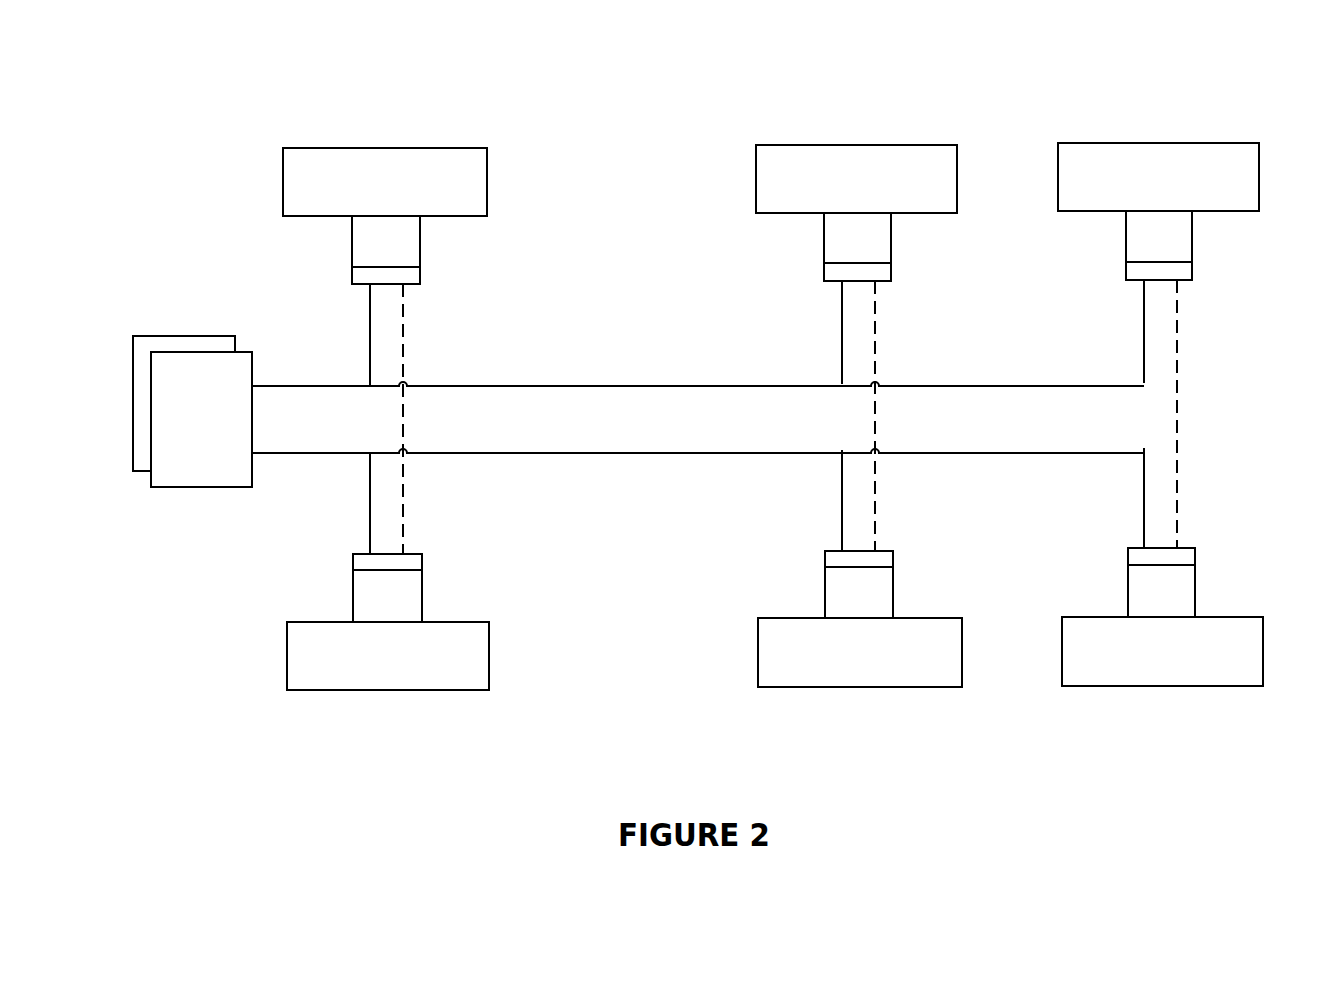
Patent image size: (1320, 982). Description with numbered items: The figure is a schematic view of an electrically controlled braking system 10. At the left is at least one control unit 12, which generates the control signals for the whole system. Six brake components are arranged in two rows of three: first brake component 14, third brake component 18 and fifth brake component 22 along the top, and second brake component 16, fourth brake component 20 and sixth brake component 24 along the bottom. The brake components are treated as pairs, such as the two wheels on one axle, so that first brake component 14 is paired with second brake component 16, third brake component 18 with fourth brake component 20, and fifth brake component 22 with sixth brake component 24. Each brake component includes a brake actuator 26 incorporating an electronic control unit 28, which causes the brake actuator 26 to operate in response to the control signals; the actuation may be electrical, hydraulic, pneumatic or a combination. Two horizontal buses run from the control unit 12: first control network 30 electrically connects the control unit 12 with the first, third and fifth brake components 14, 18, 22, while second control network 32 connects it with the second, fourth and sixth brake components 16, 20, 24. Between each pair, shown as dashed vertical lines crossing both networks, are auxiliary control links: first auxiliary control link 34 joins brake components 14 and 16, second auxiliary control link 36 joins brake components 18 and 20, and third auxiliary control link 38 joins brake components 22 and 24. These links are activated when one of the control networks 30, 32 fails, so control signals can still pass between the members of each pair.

The electrically controlled braking system 10 is at (442, 758).
The control unit 12 is at (220, 365).
The first brake component 14 is at (429, 153).
The second brake component 16 is at (448, 672).
The third brake component 18 is at (782, 153).
The fourth brake component 20 is at (811, 675).
The fifth brake component 22 is at (1090, 153).
The sixth brake component 24 is at (1089, 673).
The brake actuator 26 is at (403, 240).
The electronic control unit 28 is at (840, 273).
The first control network 30 is at (698, 369).
The second control network 32 is at (698, 474).
The first auxiliary control link 34 is at (403, 517).
The second auxiliary control link 36 is at (875, 493).
The third auxiliary control link 38 is at (1177, 420).